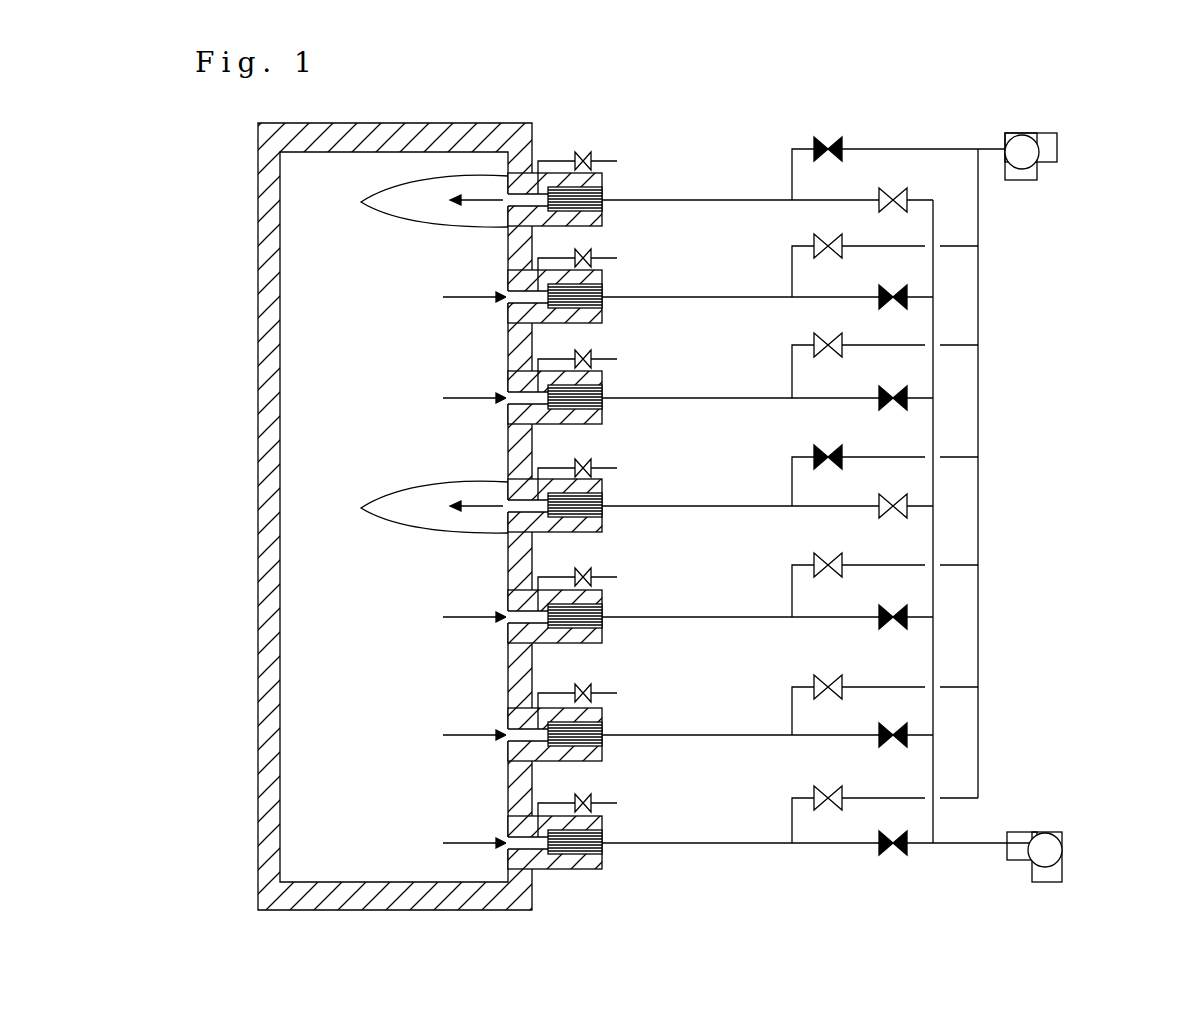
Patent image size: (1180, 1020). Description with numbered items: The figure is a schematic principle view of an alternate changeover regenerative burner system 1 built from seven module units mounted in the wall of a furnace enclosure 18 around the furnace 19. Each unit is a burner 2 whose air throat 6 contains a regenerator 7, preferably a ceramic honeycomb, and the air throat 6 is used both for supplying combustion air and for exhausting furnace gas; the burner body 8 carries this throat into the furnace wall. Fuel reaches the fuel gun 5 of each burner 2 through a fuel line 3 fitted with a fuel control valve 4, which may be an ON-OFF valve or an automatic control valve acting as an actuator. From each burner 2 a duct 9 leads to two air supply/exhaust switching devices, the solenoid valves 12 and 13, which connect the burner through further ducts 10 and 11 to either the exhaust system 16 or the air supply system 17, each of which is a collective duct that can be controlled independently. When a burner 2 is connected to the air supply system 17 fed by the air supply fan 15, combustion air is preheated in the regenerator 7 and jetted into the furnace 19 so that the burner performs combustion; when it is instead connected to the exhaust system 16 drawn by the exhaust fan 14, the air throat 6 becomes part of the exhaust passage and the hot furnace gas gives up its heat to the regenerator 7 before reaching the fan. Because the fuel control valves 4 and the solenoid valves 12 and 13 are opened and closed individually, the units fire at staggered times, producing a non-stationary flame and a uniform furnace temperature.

The burner system 1 is at (680, 495).
The burner 2 is at (571, 501).
The fuel line 3 is at (600, 158).
The fuel control valve 4 is at (587, 154).
The fuel gun 5 is at (540, 158).
The air throat 6 is at (520, 204).
The regenerator 7 is at (598, 848).
The burner body 8 is at (600, 218).
The duct 9 is at (739, 199).
The duct 10 is at (945, 148).
The duct 11 is at (841, 737).
The solenoid valve 12 is at (816, 138).
The solenoid valve 13 is at (886, 188).
The exhaust fan 14 is at (1034, 163).
The air supply fan 15 is at (1063, 850).
The exhaust system 16 is at (980, 300).
The air supply system 17 is at (935, 745).
The furnace enclosure 18 is at (265, 507).
The furnace 19 is at (305, 472).